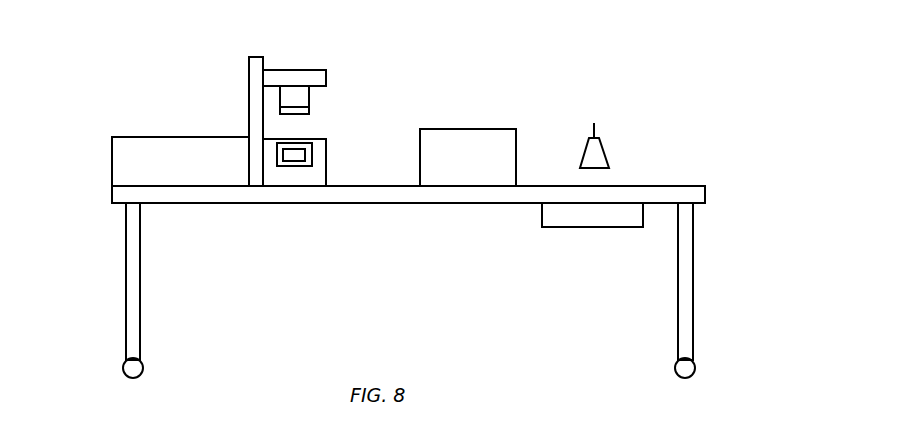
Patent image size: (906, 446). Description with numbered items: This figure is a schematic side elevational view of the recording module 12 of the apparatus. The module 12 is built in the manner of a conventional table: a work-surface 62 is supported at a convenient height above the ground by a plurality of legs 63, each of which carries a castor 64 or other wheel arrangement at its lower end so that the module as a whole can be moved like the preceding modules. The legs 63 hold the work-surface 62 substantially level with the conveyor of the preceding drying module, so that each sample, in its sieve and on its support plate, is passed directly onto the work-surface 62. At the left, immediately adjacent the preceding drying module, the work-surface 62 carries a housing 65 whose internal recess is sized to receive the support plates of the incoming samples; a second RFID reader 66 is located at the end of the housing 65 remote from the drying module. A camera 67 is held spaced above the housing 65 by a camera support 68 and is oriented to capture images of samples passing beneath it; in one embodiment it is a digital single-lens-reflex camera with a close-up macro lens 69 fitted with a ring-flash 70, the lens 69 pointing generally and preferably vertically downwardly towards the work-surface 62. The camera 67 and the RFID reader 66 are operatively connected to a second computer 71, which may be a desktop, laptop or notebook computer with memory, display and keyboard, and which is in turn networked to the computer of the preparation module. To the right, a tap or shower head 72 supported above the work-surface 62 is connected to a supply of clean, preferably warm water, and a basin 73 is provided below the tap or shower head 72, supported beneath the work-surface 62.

The recording module 12 is at (672, 75).
The work-surface 62 is at (360, 200).
The legs 63 is at (130, 288).
The castor 64 is at (124, 371).
The housing 65 is at (120, 153).
The second RFID reader 66 is at (302, 155).
The camera 67 is at (298, 70).
The camera support 68 is at (252, 97).
The close-up (macro) lens 69 is at (305, 96).
The ring-flash 70 is at (306, 112).
The second computer 71 is at (462, 140).
The tap or shower head 72 is at (603, 145).
The basin 73 is at (593, 222).